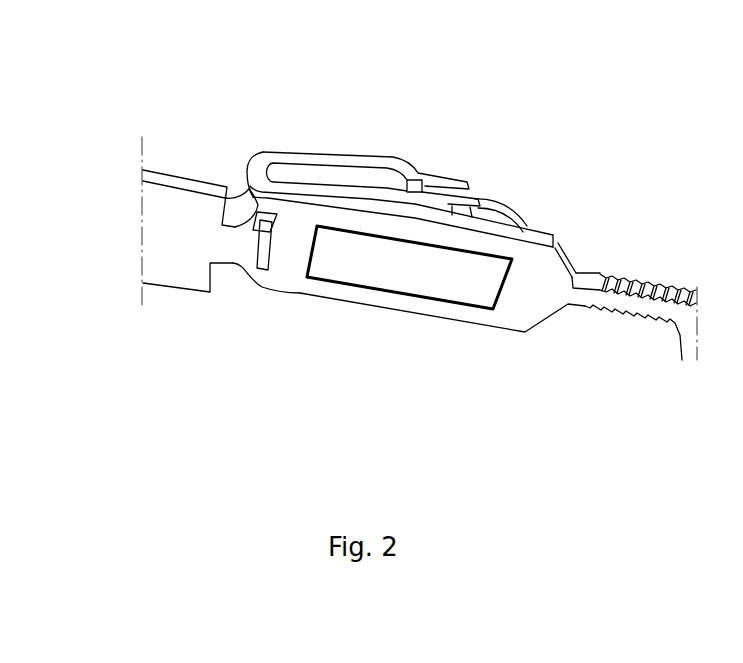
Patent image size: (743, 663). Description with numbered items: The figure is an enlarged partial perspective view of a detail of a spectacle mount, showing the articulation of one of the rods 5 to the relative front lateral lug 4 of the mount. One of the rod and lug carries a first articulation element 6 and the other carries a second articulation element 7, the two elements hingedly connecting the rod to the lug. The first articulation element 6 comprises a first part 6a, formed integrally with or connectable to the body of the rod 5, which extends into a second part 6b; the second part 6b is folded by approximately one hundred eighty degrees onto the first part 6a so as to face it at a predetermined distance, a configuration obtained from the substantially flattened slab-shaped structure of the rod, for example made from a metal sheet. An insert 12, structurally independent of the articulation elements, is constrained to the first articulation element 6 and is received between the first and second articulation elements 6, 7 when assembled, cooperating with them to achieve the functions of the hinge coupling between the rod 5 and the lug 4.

The lateral lug 4 is at (174, 172).
The rod 5 is at (678, 330).
The first articulation element 6 is at (503, 355).
The first part 6a is at (319, 298).
The second part 6b is at (300, 143).
The second articulation element 7 is at (227, 272).
The insert 12 is at (505, 206).